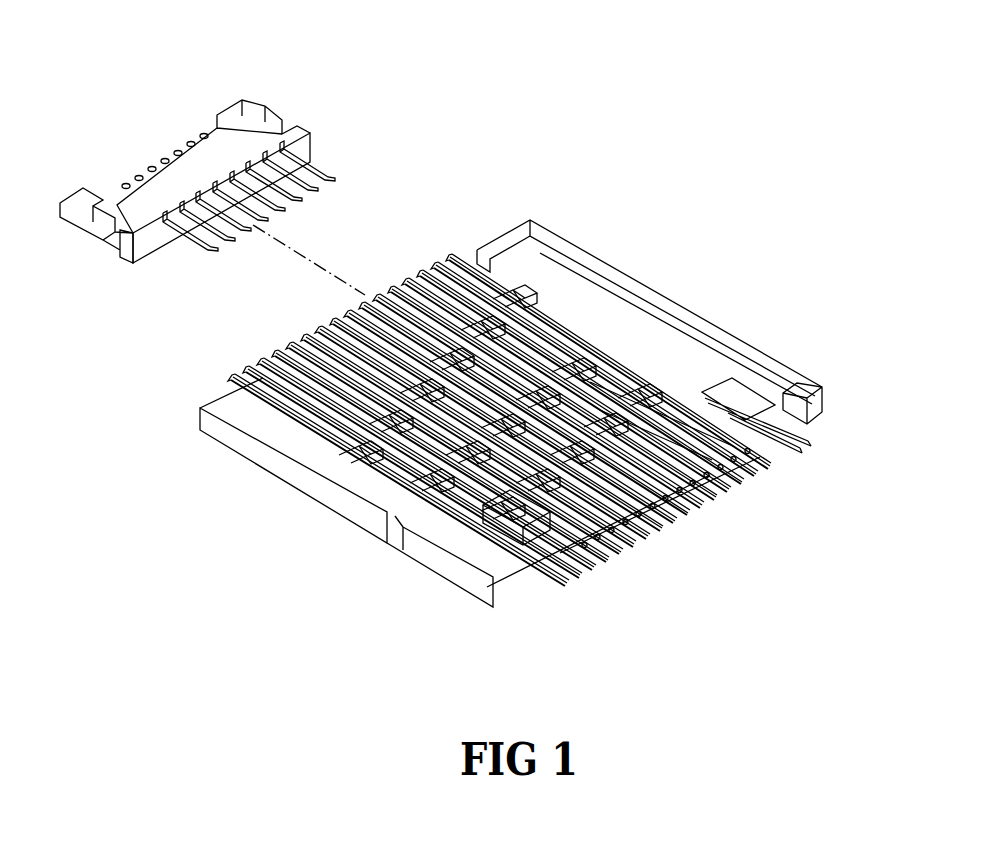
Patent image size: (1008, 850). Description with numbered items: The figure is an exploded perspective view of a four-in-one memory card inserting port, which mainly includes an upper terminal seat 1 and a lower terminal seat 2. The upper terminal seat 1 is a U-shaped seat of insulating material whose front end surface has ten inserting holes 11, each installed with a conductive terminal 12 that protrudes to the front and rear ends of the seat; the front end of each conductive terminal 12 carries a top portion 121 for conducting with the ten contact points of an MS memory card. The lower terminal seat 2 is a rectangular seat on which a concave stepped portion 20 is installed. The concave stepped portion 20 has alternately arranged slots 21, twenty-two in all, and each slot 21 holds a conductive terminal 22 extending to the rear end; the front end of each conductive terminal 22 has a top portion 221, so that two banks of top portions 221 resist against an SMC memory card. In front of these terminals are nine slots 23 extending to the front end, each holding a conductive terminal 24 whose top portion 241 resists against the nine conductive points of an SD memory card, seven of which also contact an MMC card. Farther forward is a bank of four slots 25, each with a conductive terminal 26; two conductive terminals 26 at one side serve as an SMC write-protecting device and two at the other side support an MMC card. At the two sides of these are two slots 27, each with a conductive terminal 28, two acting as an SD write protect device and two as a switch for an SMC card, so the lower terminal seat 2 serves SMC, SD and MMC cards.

The upper terminal seat 1 is at (270, 102).
The inserting hole 11 is at (183, 237).
The conductive terminal 12 is at (313, 168).
The top portion 121 is at (317, 190).
The lower terminal seat 2 is at (635, 268).
The concave stepped portion 20 is at (572, 272).
The slot 21 is at (440, 305).
The conductive terminal 22 is at (512, 305).
The top portion 221 is at (630, 357).
The slot 23 is at (497, 493).
The conductive terminal 24 is at (595, 568).
The top portion 241 is at (635, 405).
The slot 25 is at (645, 510).
The conductive terminal 26 is at (650, 540).
The slot 27 is at (783, 413).
The conductive terminal 28 is at (808, 443).